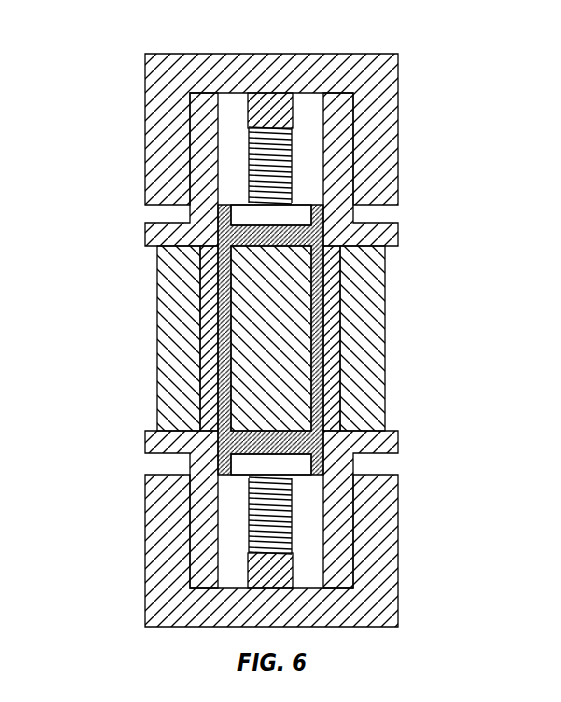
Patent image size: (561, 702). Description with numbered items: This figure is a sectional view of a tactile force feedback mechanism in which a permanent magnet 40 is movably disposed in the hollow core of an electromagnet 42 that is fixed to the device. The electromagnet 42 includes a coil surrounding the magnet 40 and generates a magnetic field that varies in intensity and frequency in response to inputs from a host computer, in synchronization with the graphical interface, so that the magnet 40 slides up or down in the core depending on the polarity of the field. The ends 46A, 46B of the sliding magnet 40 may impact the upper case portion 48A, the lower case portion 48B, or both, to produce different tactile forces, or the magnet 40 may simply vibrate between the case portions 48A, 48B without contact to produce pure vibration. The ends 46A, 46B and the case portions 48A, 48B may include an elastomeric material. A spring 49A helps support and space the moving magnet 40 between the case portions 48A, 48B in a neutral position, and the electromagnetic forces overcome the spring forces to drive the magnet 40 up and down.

The permanent magnet 40 is at (283, 338).
The electromagnet 42 is at (368, 373).
The end of the sliding magnet 46A is at (247, 217).
The end of the sliding magnet 46B is at (247, 467).
The upper case portion 48A is at (270, 112).
The lower case portion 48B is at (265, 580).
The spring 49A is at (297, 137).